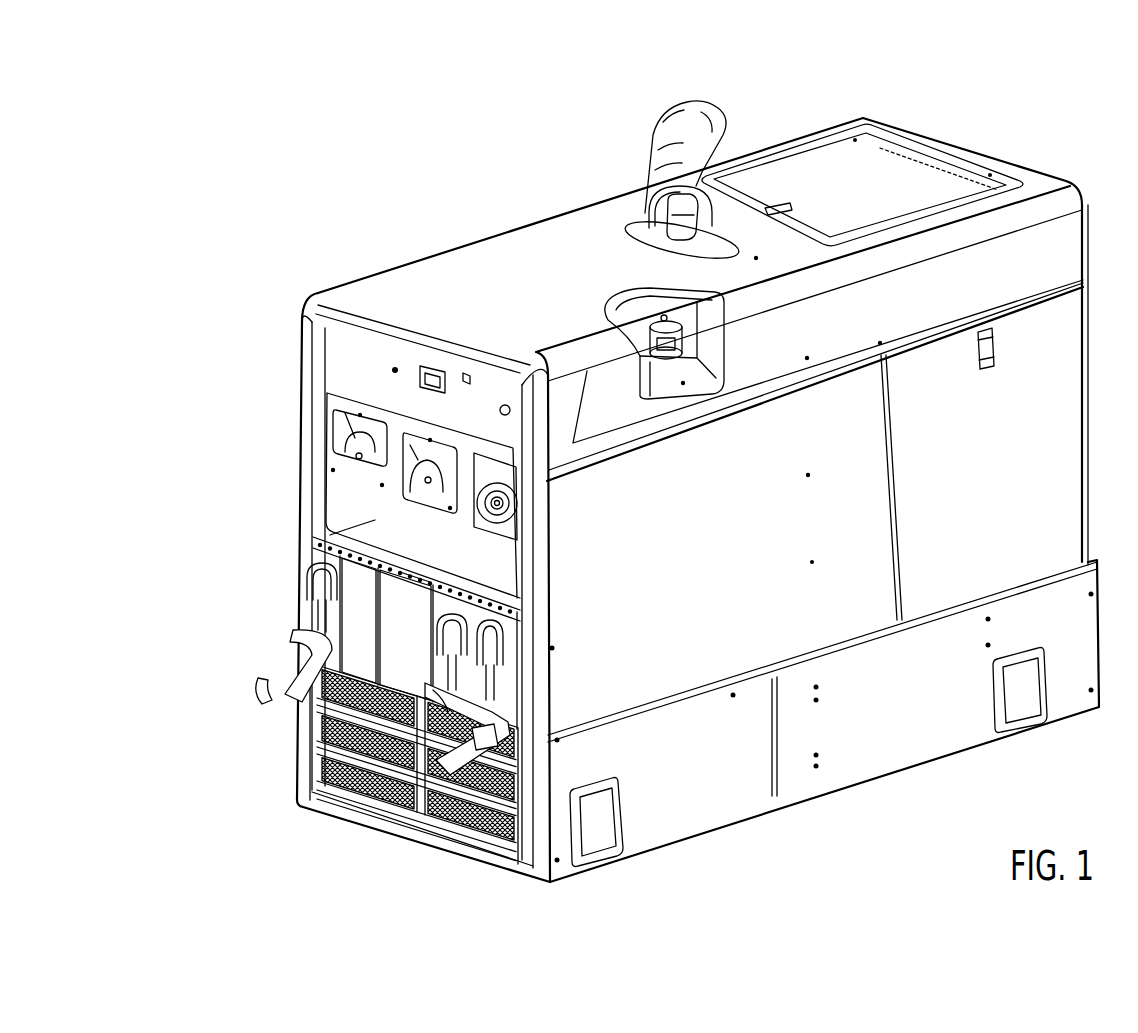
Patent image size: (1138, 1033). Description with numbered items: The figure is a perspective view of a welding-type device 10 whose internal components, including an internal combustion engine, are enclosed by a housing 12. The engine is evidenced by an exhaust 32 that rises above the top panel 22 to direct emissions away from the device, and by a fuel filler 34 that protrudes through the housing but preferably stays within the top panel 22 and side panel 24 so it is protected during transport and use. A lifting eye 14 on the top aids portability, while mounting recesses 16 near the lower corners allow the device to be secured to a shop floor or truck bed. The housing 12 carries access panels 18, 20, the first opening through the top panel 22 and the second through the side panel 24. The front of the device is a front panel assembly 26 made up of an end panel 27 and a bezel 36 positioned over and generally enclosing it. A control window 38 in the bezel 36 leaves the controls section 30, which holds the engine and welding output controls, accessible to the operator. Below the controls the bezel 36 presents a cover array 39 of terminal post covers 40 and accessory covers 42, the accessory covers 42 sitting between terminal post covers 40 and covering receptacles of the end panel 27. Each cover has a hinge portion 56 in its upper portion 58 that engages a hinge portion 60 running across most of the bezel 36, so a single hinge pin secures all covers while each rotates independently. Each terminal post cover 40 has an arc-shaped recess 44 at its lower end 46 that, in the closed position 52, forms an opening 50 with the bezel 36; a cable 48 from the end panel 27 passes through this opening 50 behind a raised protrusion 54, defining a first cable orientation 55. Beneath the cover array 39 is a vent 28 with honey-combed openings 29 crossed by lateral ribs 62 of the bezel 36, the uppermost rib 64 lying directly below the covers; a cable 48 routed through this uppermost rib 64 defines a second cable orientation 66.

The welding-type device 10 is at (1063, 122).
The housing 12 is at (1085, 243).
The lifting eye 14 is at (706, 232).
The mounting recesses 16 is at (597, 845).
The access panel 18 is at (856, 187).
The access panel 20 is at (1007, 461).
The top panel 22 is at (590, 274).
The side panel 24 is at (733, 532).
The front panel assembly 26 is at (210, 322).
The end panel 27 is at (333, 500).
The vent 28 is at (445, 849).
The honey-combed openings 29 is at (330, 790).
The controls section 30 is at (371, 360).
The exhaust 32 is at (717, 117).
The fuel filler 34 is at (741, 342).
The bezel 36 is at (305, 325).
The control window 38 is at (482, 385).
The cover array 39 is at (233, 575).
The terminal post covers 40 is at (307, 578).
The accessory covers 42 is at (368, 637).
The arc-shaped recess 44 is at (296, 636).
The lower end 46 is at (258, 622).
The cable 48 is at (258, 684).
The opening 50 is at (392, 760).
The closed position 52 is at (617, 645).
The protrusion 54 is at (331, 612).
The first cable orientation 55 is at (300, 700).
The hinge portion 56 is at (347, 532).
The upper portion 58 is at (296, 537).
The hinge portion of bezel 60 is at (410, 576).
The lateral ribs 62 is at (515, 792).
The uppermost rib 64 is at (520, 727).
The second cable orientation 66 is at (417, 785).